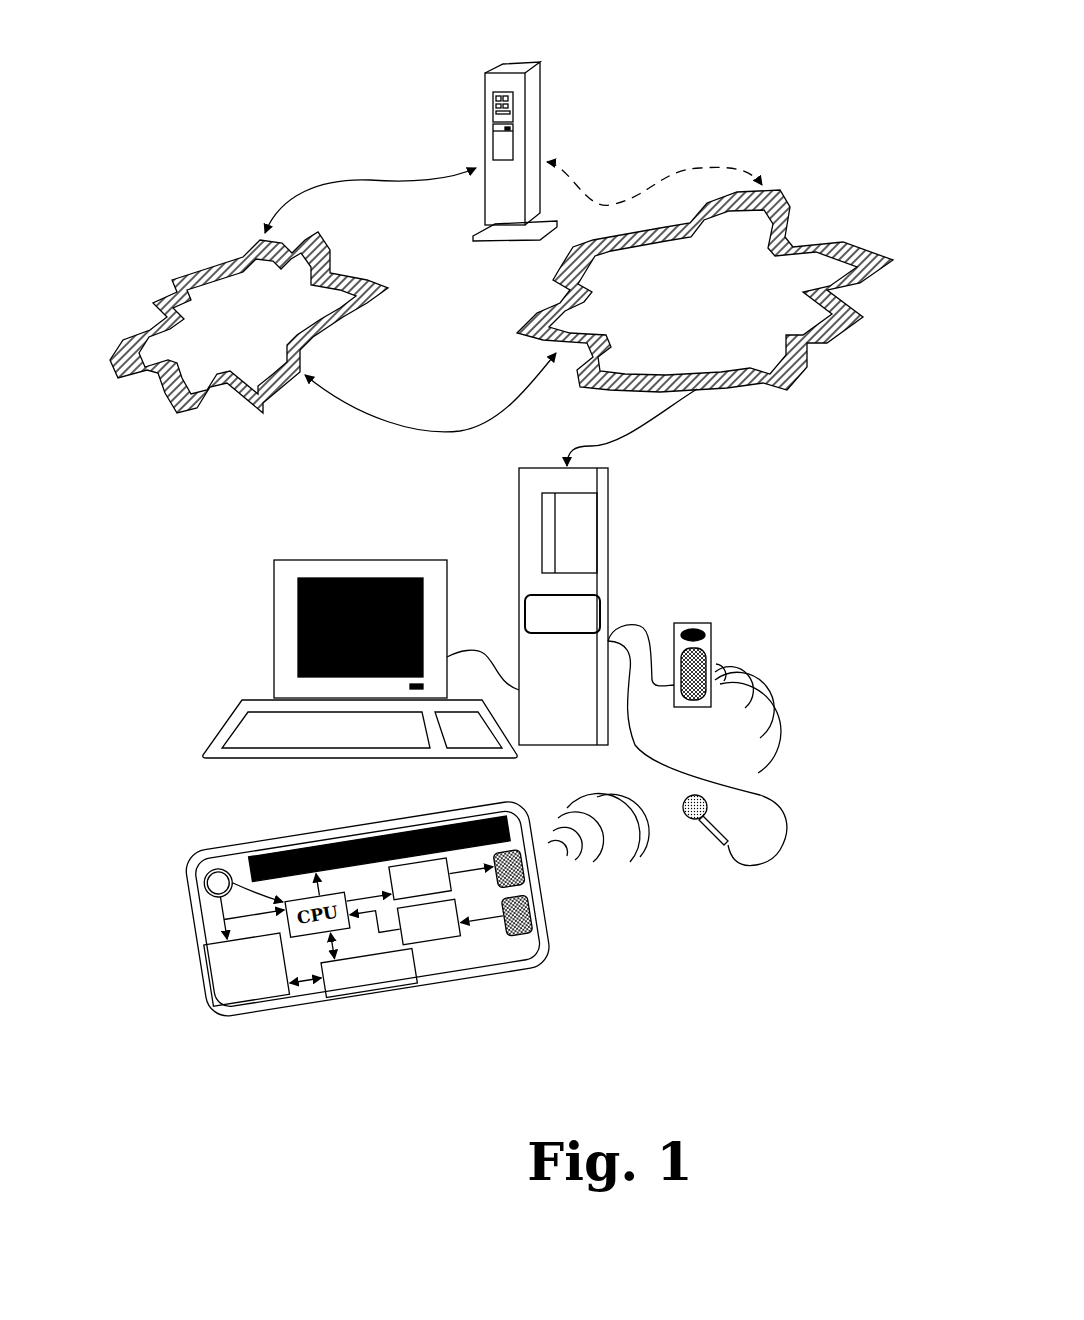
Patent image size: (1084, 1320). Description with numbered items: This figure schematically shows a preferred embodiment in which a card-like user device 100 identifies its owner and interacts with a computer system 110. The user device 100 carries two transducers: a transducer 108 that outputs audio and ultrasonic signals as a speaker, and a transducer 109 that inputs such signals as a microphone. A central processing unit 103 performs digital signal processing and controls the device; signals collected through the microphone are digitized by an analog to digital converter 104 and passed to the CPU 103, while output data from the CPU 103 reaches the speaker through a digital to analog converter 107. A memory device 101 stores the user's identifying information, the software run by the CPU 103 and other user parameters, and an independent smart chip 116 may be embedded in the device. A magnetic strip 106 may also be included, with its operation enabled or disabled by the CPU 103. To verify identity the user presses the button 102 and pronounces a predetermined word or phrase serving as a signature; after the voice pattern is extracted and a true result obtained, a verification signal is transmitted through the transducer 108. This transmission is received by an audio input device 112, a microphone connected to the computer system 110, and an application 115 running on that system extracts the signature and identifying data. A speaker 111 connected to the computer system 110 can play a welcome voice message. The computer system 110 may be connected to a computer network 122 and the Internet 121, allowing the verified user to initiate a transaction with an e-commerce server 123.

The user device 100 is at (609, 1021).
The memory device 101 is at (321, 996).
The button 102 is at (199, 890).
The central processing unit (CPU) 103 is at (233, 858).
The analog to digital converter (ADC) 104 is at (456, 946).
The magnetic strip 106 is at (272, 851).
The digital to analog converter (DAC) 107 is at (453, 861).
The transducer (speaker) 108 is at (529, 875).
The transducer (microphone) 109 is at (538, 918).
The computer system 110 is at (304, 509).
The speaker 111 is at (700, 617).
The audio input device (microphone) 112 is at (685, 839).
The application 115 is at (599, 596).
The smart chip 116 is at (204, 997).
The Internet 121 is at (203, 271).
The computer network 122 is at (772, 394).
The e-commerce server 123 is at (547, 122).